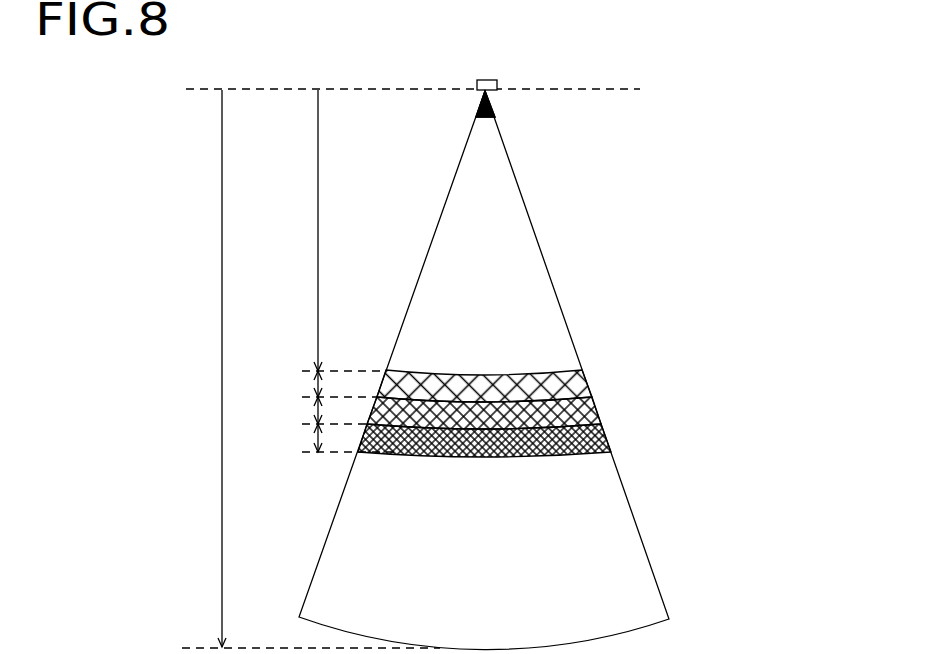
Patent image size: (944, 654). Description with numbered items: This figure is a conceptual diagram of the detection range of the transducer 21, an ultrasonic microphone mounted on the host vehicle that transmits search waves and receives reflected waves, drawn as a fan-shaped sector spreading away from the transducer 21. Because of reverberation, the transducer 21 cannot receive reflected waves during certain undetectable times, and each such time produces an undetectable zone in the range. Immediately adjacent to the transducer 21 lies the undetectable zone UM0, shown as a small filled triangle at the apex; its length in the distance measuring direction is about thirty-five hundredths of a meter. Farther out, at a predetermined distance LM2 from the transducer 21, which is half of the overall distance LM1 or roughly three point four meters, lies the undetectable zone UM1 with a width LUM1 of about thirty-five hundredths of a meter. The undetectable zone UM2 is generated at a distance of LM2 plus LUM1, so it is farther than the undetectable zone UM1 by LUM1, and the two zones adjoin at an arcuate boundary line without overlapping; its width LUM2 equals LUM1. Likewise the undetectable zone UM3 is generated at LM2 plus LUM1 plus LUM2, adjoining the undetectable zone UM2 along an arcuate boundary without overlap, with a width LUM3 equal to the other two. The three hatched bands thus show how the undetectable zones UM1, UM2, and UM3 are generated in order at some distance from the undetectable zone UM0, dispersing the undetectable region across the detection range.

The transducer 21 is at (489, 80).
The undetectable zone adjacent to the transducer UM0 is at (494, 100).
The undetectable zone UM1 is at (584, 373).
The undetectable zone UM2 is at (594, 402).
The undetectable zone UM3 is at (604, 432).
The maximum distance LM1 is at (194, 368).
The predetermined distance LM2 is at (293, 230).
The width of undetectable zone UM1 LUM1 is at (282, 383).
The width of undetectable zone UM2 LUM2 is at (282, 410).
The width of undetectable zone UM3 LUM3 is at (282, 438).